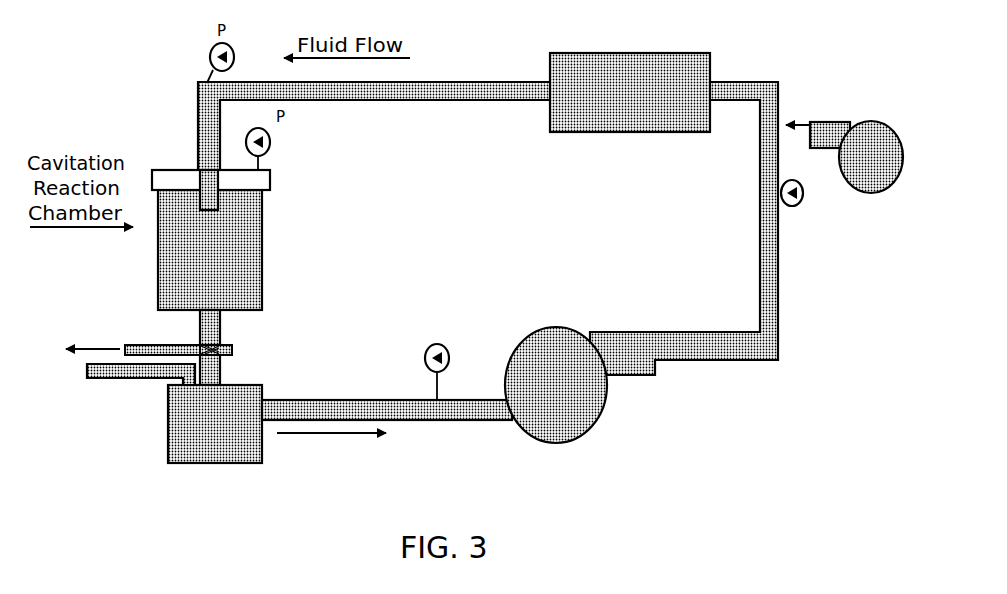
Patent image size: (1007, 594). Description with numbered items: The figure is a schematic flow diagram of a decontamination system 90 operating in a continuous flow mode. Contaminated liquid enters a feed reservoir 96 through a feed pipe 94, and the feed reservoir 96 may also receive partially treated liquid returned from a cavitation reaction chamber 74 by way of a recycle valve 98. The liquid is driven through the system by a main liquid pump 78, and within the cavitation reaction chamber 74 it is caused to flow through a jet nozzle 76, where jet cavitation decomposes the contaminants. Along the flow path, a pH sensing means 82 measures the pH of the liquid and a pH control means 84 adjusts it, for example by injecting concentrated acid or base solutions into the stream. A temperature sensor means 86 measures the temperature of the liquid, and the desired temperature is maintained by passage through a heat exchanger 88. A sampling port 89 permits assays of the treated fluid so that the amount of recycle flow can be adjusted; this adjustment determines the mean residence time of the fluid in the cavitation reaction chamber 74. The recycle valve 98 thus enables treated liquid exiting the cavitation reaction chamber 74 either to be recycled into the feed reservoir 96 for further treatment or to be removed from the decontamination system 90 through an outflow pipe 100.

The cavitation reaction chamber 74 is at (247, 230).
The jet nozzle 76 is at (208, 197).
The main liquid pump 78 is at (562, 335).
The pH sensing means 82 is at (793, 207).
The pH control means 84 is at (818, 127).
The temperature sensor means 86 is at (450, 352).
The heat exchanger 88 is at (558, 118).
The sampling port 89 is at (232, 352).
The decontamination system 90 is at (147, 448).
The feed pipe 94 is at (87, 370).
The feed reservoir 96 is at (183, 427).
The recycle valve 98 is at (233, 343).
The outflow pipe 100 is at (138, 344).